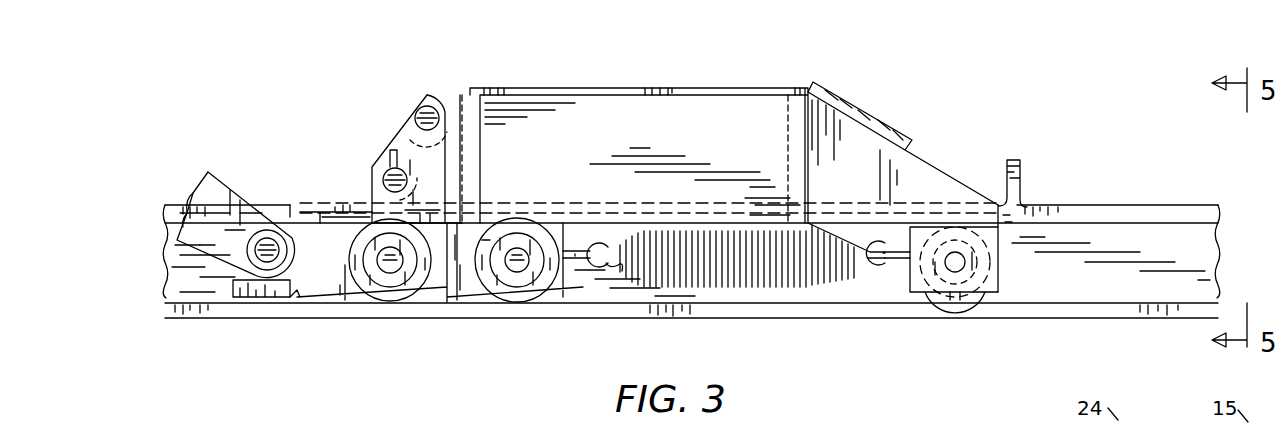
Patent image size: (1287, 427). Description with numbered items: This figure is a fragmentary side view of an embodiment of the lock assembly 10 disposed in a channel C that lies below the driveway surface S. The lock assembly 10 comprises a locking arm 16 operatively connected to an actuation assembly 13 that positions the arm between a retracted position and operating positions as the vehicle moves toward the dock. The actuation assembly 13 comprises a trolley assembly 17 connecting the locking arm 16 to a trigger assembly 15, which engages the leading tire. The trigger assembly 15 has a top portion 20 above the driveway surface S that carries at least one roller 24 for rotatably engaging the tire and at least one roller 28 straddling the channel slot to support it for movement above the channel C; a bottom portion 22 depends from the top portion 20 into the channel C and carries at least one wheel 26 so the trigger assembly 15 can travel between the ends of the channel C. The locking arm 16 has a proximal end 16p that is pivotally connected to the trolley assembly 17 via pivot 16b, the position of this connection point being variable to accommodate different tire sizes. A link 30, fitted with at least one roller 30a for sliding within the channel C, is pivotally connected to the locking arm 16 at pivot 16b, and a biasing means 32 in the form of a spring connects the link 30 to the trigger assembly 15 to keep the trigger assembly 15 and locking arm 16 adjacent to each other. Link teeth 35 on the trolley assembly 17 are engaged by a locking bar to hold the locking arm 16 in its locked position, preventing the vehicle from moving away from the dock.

The lock assembly 10 is at (1008, 95).
The actuation assembly 13 is at (503, 333).
The trigger assembly 15 is at (870, 123).
The locking arm 16 is at (225, 188).
The proximal end 16p is at (260, 250).
The pivot 16b is at (247, 275).
The trolley assembly 17 is at (585, 286).
The top portion 20 is at (717, 97).
The bottom portion 22 is at (993, 290).
The roller 24 is at (405, 108).
The wheel 26 is at (958, 300).
The roller 28 is at (372, 175).
The link 30 is at (322, 283).
The roller 30a is at (505, 300).
The biasing means 32 is at (817, 288).
The link teeth 35 is at (293, 300).
The driveway surface S is at (1195, 210).
The channel C is at (1212, 246).